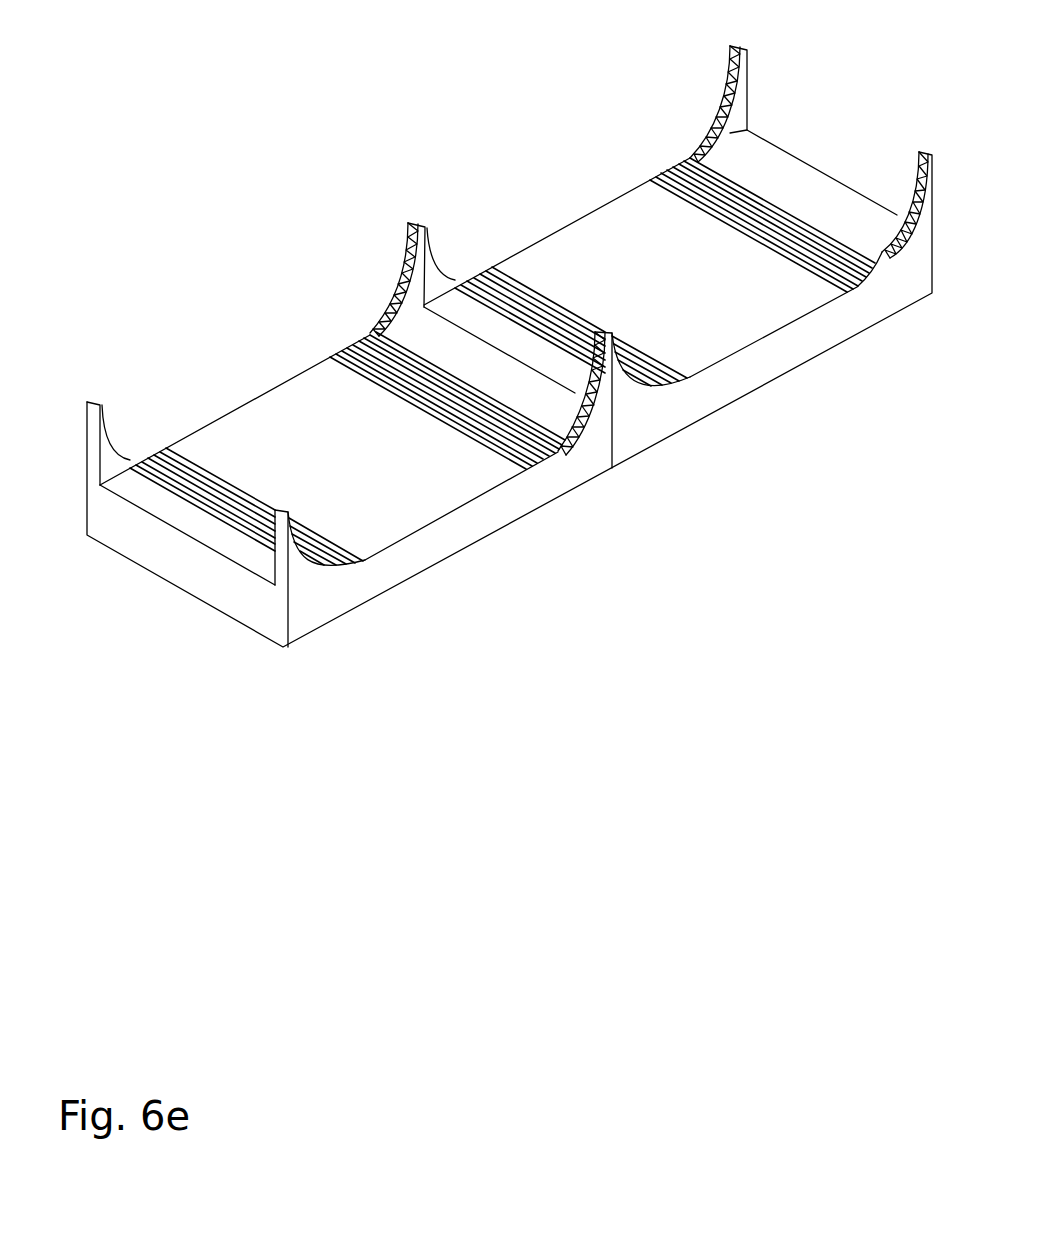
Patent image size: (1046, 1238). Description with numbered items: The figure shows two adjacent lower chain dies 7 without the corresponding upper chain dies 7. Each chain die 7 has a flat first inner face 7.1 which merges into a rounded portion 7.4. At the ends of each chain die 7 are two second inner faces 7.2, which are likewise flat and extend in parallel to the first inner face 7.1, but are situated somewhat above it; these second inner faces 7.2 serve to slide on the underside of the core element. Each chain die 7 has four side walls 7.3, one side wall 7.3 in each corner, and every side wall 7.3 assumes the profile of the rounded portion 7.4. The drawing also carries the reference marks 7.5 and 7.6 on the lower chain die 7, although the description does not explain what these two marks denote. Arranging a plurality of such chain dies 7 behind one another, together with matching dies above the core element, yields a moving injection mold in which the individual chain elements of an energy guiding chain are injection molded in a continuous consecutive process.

The chain die 7 is at (318, 609).
The first inner face 7.1 is at (405, 503).
The second inner face 7.2 is at (199, 519).
The side wall 7.3 is at (108, 457).
The rounded portion 7.4 is at (354, 343).
The partition wall 7.5 is at (583, 461).
The base of tray 7.6 is at (225, 585).